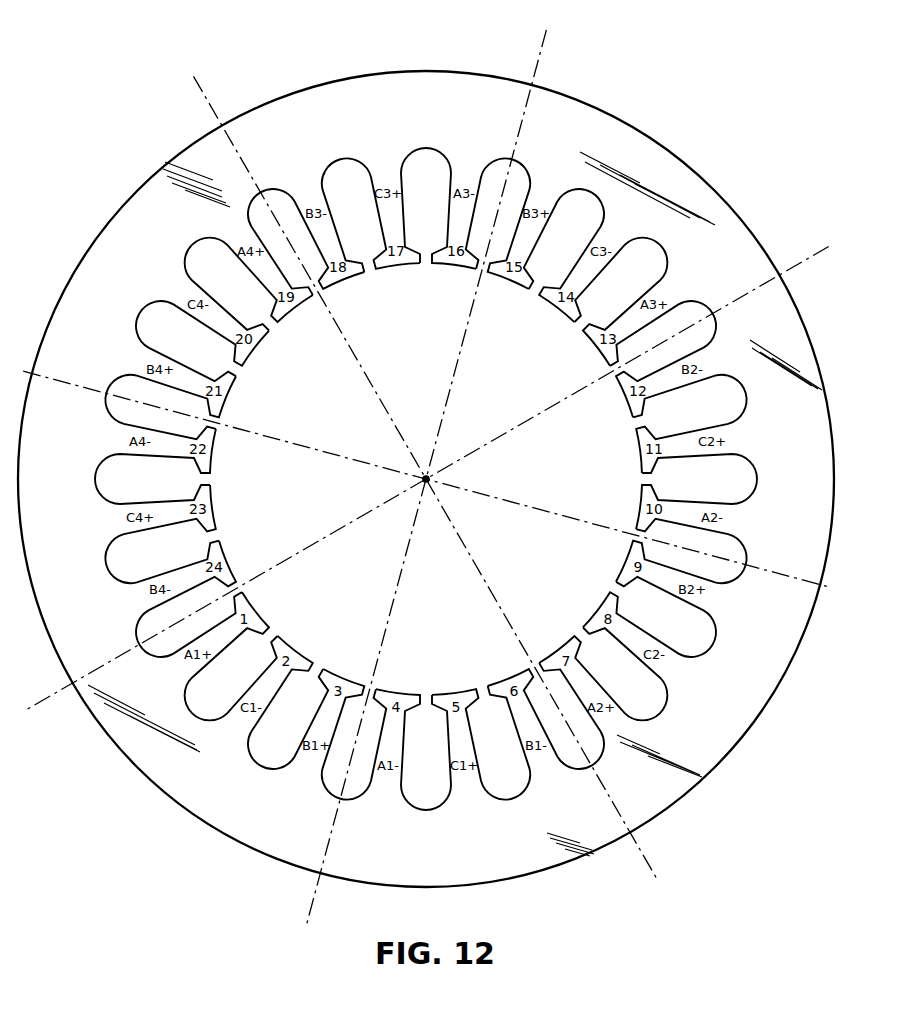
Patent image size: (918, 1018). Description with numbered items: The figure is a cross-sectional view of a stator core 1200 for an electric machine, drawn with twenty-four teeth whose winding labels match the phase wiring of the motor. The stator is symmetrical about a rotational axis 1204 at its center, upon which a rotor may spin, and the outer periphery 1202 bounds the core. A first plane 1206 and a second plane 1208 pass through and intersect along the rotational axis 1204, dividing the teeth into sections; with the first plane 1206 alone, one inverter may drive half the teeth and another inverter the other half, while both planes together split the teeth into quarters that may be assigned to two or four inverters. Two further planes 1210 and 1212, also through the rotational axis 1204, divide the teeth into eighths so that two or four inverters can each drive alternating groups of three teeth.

The stator core 1200 is at (676, 51).
The stator core outer periphery 1202 is at (427, 71).
The rotational axis 1204 is at (426, 478).
The first plane 1206 is at (805, 258).
The second plane 1208 is at (206, 93).
The plane 1210 is at (65, 382).
The plane 1212 is at (545, 62).